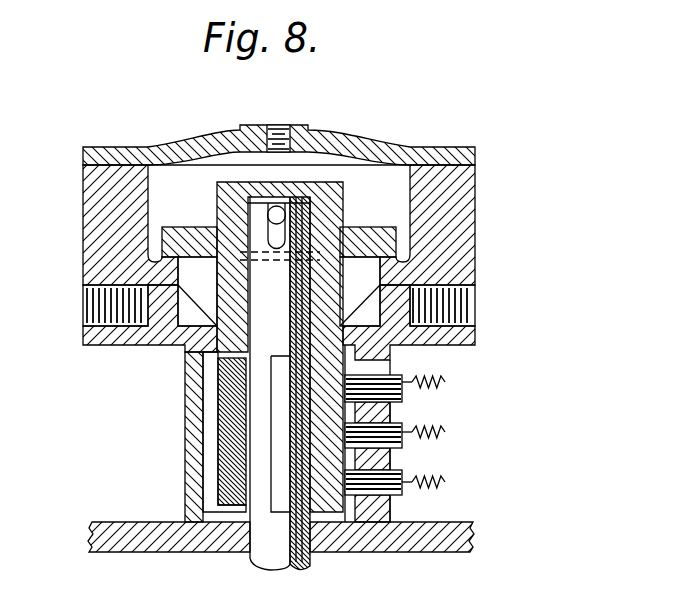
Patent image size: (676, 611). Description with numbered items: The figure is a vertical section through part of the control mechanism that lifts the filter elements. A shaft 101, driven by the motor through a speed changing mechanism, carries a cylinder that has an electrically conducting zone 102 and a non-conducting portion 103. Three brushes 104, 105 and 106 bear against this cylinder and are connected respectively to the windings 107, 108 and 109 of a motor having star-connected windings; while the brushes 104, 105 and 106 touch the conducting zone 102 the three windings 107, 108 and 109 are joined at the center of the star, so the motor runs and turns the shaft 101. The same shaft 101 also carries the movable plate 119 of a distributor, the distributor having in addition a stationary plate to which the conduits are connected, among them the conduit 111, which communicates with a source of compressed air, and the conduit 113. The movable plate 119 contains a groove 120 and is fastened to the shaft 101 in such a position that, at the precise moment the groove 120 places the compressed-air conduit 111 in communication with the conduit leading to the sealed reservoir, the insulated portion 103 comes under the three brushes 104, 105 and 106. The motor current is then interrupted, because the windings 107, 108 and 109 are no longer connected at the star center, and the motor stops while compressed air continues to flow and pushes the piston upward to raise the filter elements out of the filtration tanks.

The shaft 101 is at (275, 383).
The electrically conducting zone 102 is at (316, 564).
The non-conducting portion 103 is at (222, 452).
The brush 104 is at (402, 500).
The brush 105 is at (402, 448).
The brush 106 is at (402, 400).
The winding 107 is at (445, 482).
The winding 108 is at (445, 432).
The winding 109 is at (445, 382).
The conduit 111 is at (462, 309).
The conduit 113 is at (92, 302).
The movable plate 119 is at (184, 237).
The groove 120 is at (370, 250).